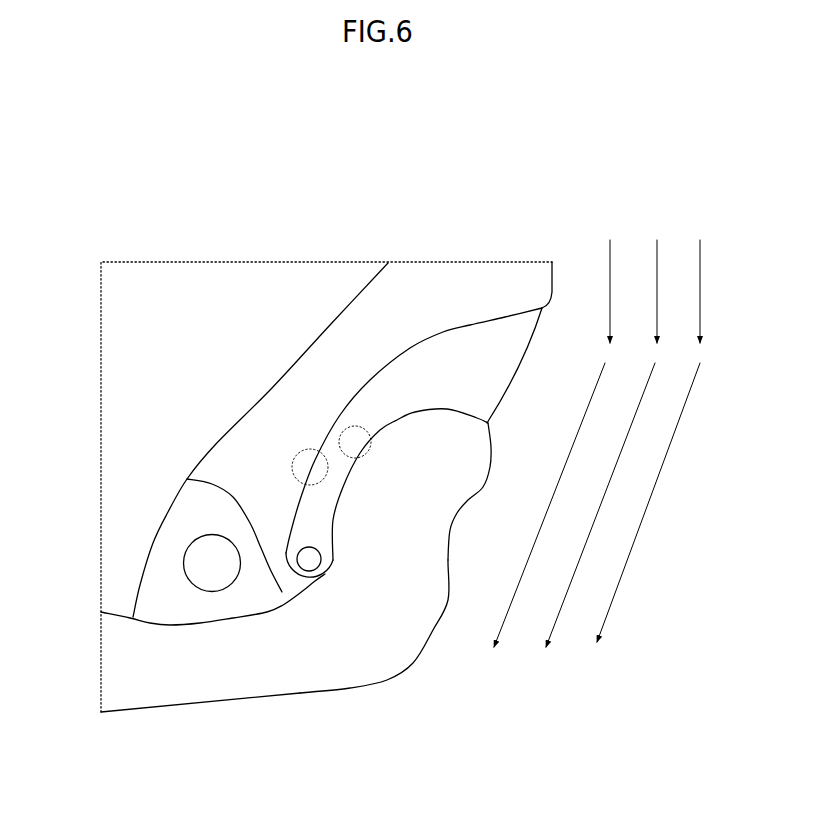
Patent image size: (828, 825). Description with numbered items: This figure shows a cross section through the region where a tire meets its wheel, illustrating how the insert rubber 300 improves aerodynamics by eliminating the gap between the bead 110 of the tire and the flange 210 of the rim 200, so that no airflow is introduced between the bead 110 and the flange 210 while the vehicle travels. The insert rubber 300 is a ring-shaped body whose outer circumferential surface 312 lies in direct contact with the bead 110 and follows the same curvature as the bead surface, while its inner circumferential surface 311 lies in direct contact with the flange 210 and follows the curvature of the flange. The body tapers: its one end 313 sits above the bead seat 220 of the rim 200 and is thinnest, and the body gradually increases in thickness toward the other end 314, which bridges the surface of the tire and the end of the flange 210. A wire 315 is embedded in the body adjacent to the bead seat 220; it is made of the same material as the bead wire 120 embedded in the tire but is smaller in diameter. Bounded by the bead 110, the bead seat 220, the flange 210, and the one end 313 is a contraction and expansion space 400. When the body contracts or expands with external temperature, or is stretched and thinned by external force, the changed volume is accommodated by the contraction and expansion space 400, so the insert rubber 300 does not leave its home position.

The bead 110 is at (346, 355).
The bead wire 120 is at (203, 562).
The rim 200 is at (354, 699).
The flange 210 is at (478, 447).
The bead seat 220 is at (178, 687).
The insert rubber 300 is at (445, 350).
The inner circumferential surface 311 is at (353, 463).
The outer circumferential surface 312 is at (297, 488).
The one end 313 is at (287, 592).
The other end 314 is at (507, 349).
The wire 315 is at (330, 566).
The contraction and expansion space 400 is at (187, 479).